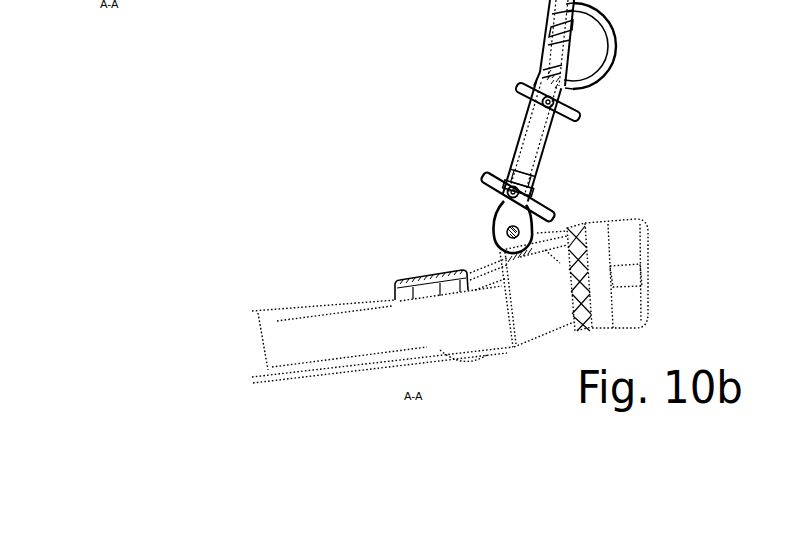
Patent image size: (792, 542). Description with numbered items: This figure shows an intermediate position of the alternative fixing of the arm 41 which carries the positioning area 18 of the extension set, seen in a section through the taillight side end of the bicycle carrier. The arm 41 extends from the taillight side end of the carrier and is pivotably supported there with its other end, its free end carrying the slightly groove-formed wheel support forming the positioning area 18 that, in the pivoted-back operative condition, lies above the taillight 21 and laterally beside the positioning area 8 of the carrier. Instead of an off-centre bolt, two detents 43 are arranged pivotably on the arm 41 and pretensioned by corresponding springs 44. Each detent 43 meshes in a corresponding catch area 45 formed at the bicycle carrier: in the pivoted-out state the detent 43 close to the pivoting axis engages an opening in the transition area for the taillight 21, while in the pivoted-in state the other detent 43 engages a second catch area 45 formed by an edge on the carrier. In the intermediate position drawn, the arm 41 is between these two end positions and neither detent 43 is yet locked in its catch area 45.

The positioning area 8 is at (190, 12).
The positioning area of the extension set 18 is at (615, 65).
The taillight 21 is at (628, 277).
The arm 41 is at (540, 135).
The detent 43 is at (517, 90).
The spring 44 is at (543, 78).
The catch area 45 is at (397, 293).